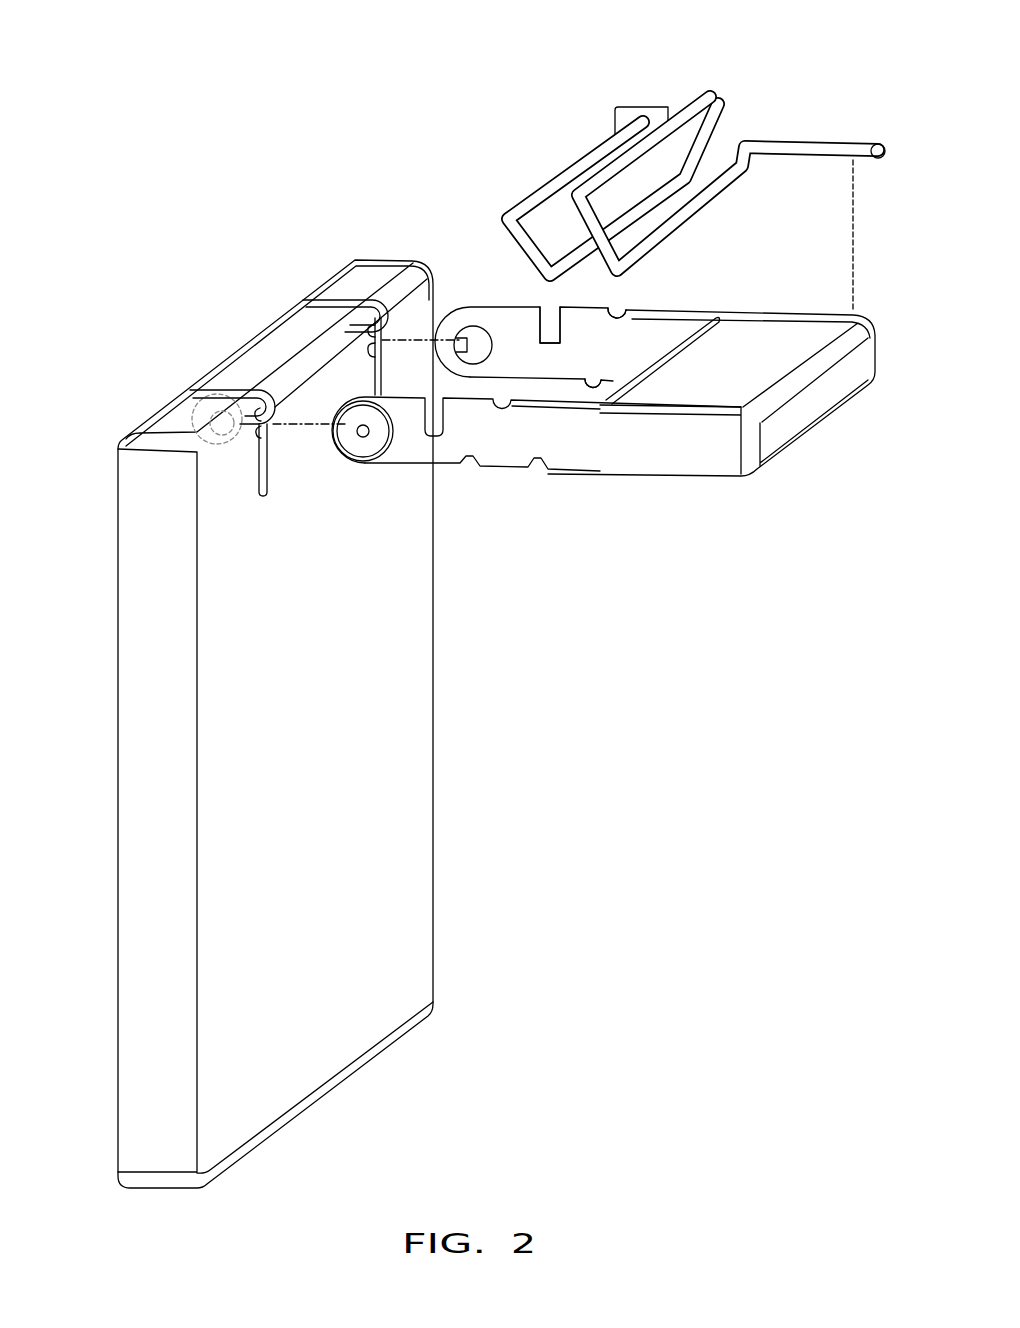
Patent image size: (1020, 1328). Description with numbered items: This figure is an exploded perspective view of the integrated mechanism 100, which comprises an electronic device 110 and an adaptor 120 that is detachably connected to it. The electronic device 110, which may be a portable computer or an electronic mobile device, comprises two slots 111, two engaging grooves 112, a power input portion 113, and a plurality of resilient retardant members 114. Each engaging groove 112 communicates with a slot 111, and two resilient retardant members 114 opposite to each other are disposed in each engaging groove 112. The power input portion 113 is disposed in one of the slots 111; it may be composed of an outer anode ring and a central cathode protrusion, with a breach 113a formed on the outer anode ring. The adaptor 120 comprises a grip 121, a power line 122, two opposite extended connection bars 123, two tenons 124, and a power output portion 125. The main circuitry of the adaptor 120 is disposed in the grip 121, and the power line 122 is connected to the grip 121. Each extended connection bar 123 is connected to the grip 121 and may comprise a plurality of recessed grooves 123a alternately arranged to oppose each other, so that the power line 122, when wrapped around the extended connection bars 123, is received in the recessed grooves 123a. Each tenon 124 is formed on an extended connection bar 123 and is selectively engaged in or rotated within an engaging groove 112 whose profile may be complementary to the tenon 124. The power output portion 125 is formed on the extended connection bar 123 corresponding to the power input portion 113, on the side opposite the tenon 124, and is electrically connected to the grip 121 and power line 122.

The integrated mechanism 100 is at (68, 34).
The electronic device 110 is at (333, 1085).
The slot 111 is at (328, 305).
The engaging groove 112 is at (265, 432).
The power input portion 113 is at (218, 457).
The breach 113a is at (267, 460).
The resilient retardant member 114 is at (371, 331).
The adaptor 120 is at (608, 344).
The grip 121 is at (790, 326).
The power line 122 is at (790, 147).
The extended connection bar 123 is at (514, 406).
The recessed groove 123a is at (602, 384).
The tenon 124 is at (468, 340).
The power output portion 125 is at (366, 445).